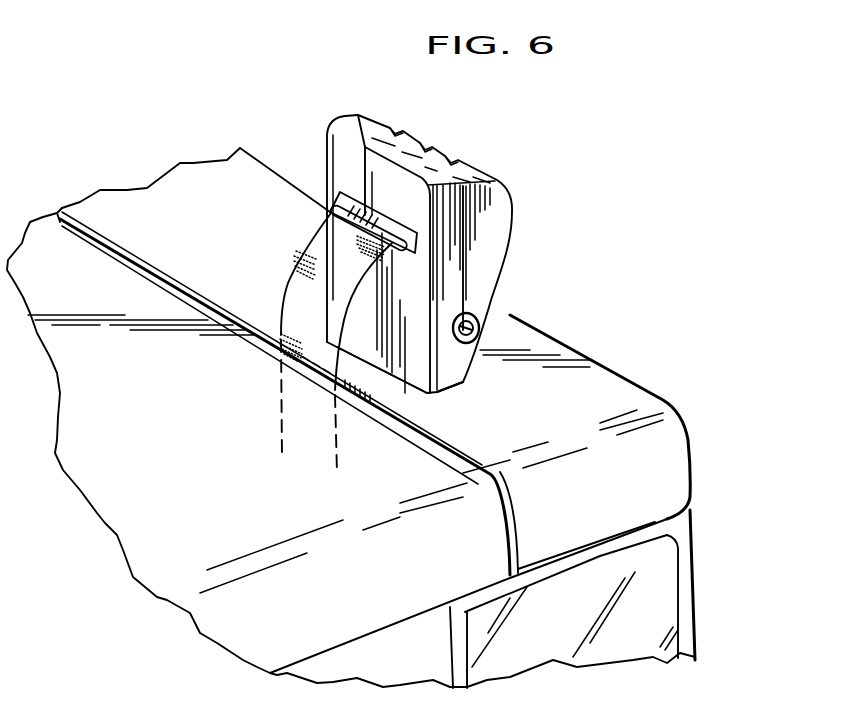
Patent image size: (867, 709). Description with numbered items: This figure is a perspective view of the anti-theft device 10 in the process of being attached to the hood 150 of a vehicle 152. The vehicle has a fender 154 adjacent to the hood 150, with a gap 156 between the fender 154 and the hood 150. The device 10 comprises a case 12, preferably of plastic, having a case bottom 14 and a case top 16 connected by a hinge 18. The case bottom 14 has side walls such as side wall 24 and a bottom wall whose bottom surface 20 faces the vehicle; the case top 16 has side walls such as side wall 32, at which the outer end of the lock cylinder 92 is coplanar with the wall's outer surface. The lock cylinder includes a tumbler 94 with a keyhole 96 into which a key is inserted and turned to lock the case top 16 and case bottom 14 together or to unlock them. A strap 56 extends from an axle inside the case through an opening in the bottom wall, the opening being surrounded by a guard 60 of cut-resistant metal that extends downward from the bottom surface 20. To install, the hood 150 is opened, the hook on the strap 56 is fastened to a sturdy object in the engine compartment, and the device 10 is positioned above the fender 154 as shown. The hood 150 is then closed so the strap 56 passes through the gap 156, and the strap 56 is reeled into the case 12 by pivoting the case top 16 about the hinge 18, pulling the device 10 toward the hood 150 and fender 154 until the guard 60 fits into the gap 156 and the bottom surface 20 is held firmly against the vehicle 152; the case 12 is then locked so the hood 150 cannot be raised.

The anti-theft device 10 is at (531, 187).
The case 12 is at (371, 112).
The case bottom 14 is at (325, 146).
The case top 16 is at (515, 286).
The hinge 18 is at (438, 146).
The bottom surface 20 is at (417, 372).
The side wall 24 is at (457, 381).
The side wall 32 is at (488, 242).
The strap 56 is at (293, 293).
The guard 60 is at (332, 204).
The lock cylinder 92 is at (536, 350).
The tumbler 94 is at (476, 349).
The keyhole 96 is at (478, 327).
The hood 150 is at (96, 270).
The vehicle 152 is at (506, 501).
The fender 154 is at (617, 393).
The gap 156 is at (167, 279).